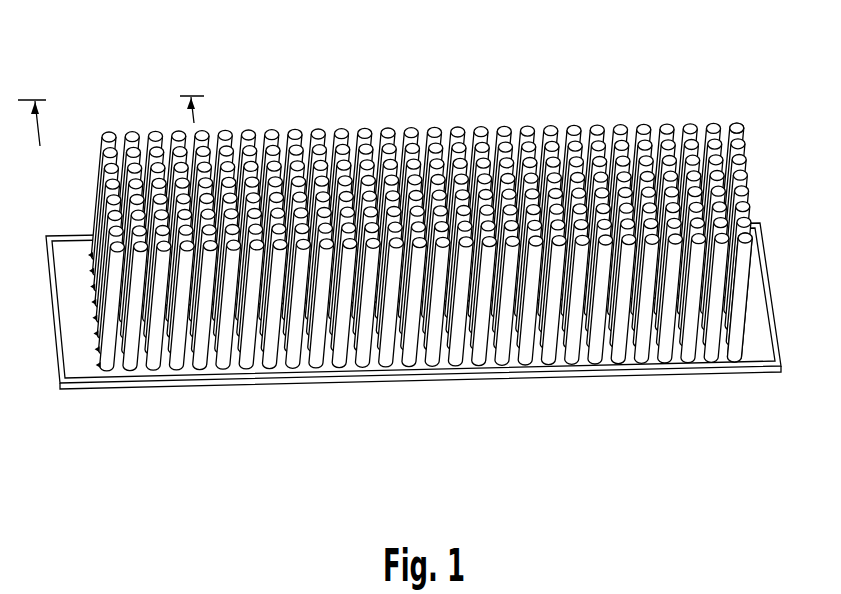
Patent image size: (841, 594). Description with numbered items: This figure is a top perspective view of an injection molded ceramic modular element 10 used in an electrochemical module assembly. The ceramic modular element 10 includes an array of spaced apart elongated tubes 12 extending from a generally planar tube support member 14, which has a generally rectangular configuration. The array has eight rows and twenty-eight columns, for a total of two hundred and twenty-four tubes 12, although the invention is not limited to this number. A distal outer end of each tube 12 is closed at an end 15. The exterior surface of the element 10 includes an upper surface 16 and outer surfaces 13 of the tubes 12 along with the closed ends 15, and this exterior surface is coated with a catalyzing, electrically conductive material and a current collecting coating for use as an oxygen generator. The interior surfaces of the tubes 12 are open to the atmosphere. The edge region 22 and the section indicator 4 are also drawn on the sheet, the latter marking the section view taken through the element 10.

The ceramic modular element 10 is at (413, 237).
The elongated tube 12 is at (773, 290).
The outer surface of tube 13 is at (735, 128).
The tube support member 14 is at (394, 338).
The closed end 15 is at (743, 233).
The upper surface 16 is at (60, 290).
The plate edge 22 is at (694, 368).
The section line of FIG. 4 is at (111, 108).